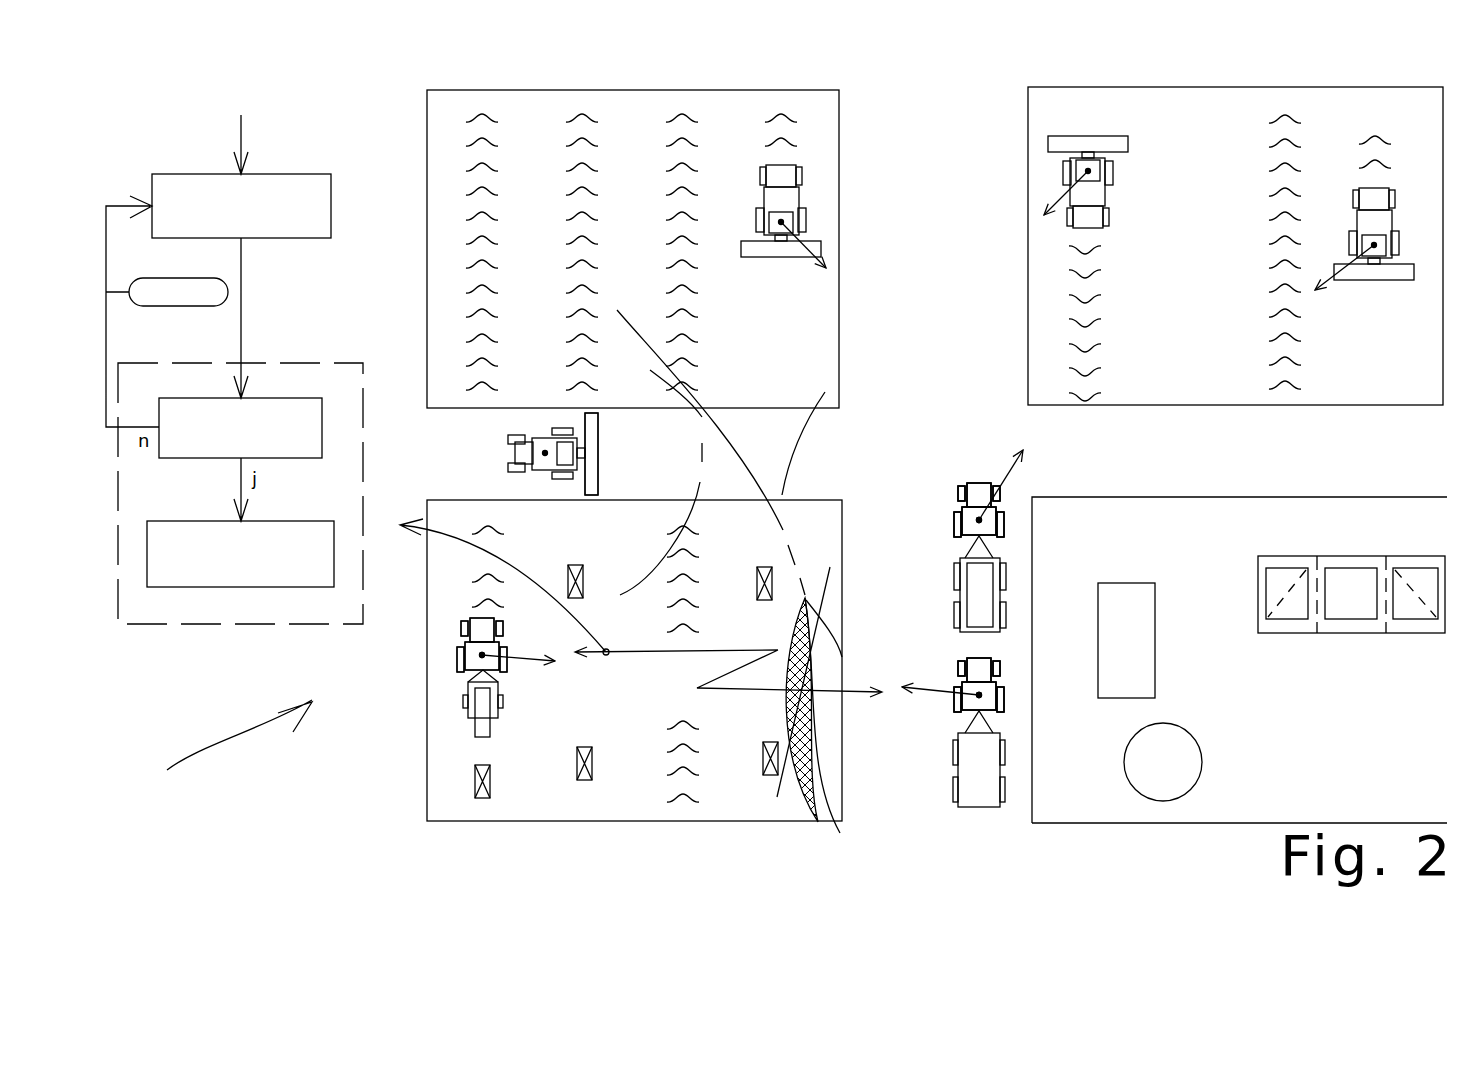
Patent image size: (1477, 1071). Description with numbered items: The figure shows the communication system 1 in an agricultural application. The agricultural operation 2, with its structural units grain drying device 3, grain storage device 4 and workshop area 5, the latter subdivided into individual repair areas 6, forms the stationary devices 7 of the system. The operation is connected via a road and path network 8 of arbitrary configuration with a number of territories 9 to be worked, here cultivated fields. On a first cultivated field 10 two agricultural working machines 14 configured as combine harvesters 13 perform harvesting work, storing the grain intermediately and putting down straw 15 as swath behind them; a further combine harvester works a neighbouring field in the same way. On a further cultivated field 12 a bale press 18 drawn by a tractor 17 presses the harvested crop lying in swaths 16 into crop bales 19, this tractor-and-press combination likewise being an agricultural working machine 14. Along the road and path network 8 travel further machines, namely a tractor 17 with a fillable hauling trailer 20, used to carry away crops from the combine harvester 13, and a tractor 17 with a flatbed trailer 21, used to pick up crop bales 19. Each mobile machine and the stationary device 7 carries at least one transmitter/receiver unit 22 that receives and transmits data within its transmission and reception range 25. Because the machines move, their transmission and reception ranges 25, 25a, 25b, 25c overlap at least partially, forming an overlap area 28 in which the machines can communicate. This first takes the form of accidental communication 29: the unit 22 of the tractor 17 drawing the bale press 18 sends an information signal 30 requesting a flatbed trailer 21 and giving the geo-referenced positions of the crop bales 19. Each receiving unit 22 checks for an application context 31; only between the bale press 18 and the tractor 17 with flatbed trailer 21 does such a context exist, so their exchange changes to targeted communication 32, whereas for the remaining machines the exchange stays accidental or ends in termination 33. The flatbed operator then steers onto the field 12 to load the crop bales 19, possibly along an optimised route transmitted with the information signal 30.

The communication system 1 is at (226, 745).
The agricultural operation 2 is at (1239, 660).
The grain drying device 3 is at (1145, 667).
The grain storage device 4 is at (1190, 747).
The workshop area 5 is at (1400, 558).
The repair area 6 is at (1288, 570).
The stationary device 7 is at (1348, 716).
The road and path network 8 is at (948, 447).
The territory to be worked 9 is at (535, 179).
The first cultivated field 10 is at (1198, 356).
The cultivated field 12 is at (445, 782).
The combine harvester 13 is at (805, 217).
The agricultural working machine 14 is at (598, 456).
The straw 15 is at (631, 252).
The swath 16 is at (693, 337).
The tractor 17 is at (472, 620).
The bale press 18 is at (495, 708).
The crop bale 19 is at (758, 577).
The hauling trailer 20 is at (988, 593).
The flatbed trailer 21 is at (995, 768).
The transmitter/receiver unit 22 is at (327, 375).
The transmission and reception range 25 is at (763, 480).
The transmission and reception range 25a is at (798, 443).
The transmission and reception range 25b is at (813, 598).
The transmission and reception range 25c is at (653, 577).
The overlap area 28 is at (793, 718).
The accidental communication 29 is at (306, 180).
The information signal 30 is at (242, 135).
The application context 31 is at (280, 458).
The targeted communication 32 is at (277, 588).
The termination 33 is at (186, 306).